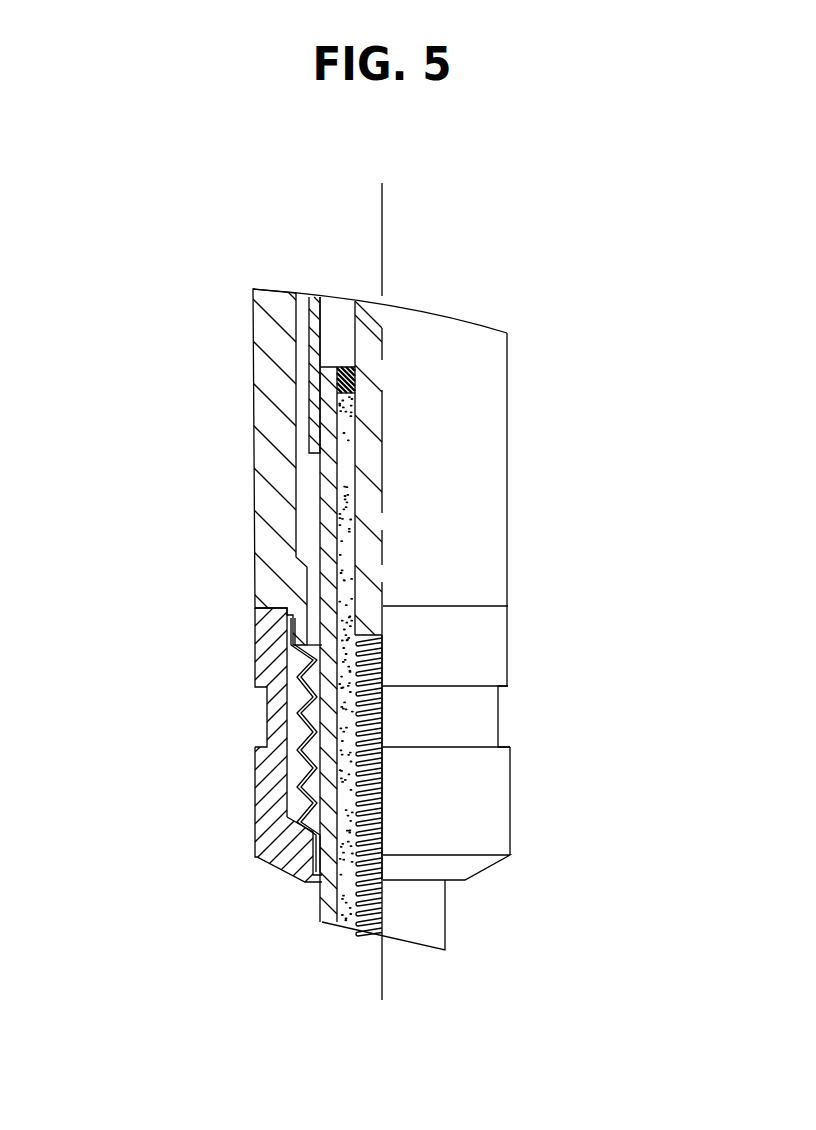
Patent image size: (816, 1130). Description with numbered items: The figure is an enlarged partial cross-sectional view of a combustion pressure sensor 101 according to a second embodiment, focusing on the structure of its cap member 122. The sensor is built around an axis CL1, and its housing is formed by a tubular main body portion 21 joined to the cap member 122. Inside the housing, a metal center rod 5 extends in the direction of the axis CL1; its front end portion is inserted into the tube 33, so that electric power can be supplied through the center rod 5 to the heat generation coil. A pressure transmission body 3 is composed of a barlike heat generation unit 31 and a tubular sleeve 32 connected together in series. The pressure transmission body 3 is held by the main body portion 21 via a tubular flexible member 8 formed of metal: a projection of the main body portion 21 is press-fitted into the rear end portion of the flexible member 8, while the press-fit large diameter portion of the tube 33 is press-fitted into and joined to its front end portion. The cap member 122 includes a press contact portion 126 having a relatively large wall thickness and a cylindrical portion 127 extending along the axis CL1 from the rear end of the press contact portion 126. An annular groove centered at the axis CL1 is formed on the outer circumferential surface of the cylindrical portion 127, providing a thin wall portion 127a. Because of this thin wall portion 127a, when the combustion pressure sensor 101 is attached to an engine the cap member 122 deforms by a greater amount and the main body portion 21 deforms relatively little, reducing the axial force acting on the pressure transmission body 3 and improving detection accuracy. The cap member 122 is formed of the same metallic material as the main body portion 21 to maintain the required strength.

The combustion pressure sensor 101 is at (612, 379).
The axis CL1 is at (382, 229).
The center rod 5 is at (355, 333).
The pressure transmission body 3 is at (150, 467).
The sleeve 32 is at (300, 435).
The heat generation unit 31 is at (322, 518).
The main body portion 21 is at (508, 548).
The thin wall portion 127a is at (498, 717).
The tube 33 is at (445, 922).
The flexible member 8 is at (300, 716).
The cap member 122 is at (140, 788).
The cylindrical portion 127 is at (257, 780).
The press contact portion 126 is at (260, 853).